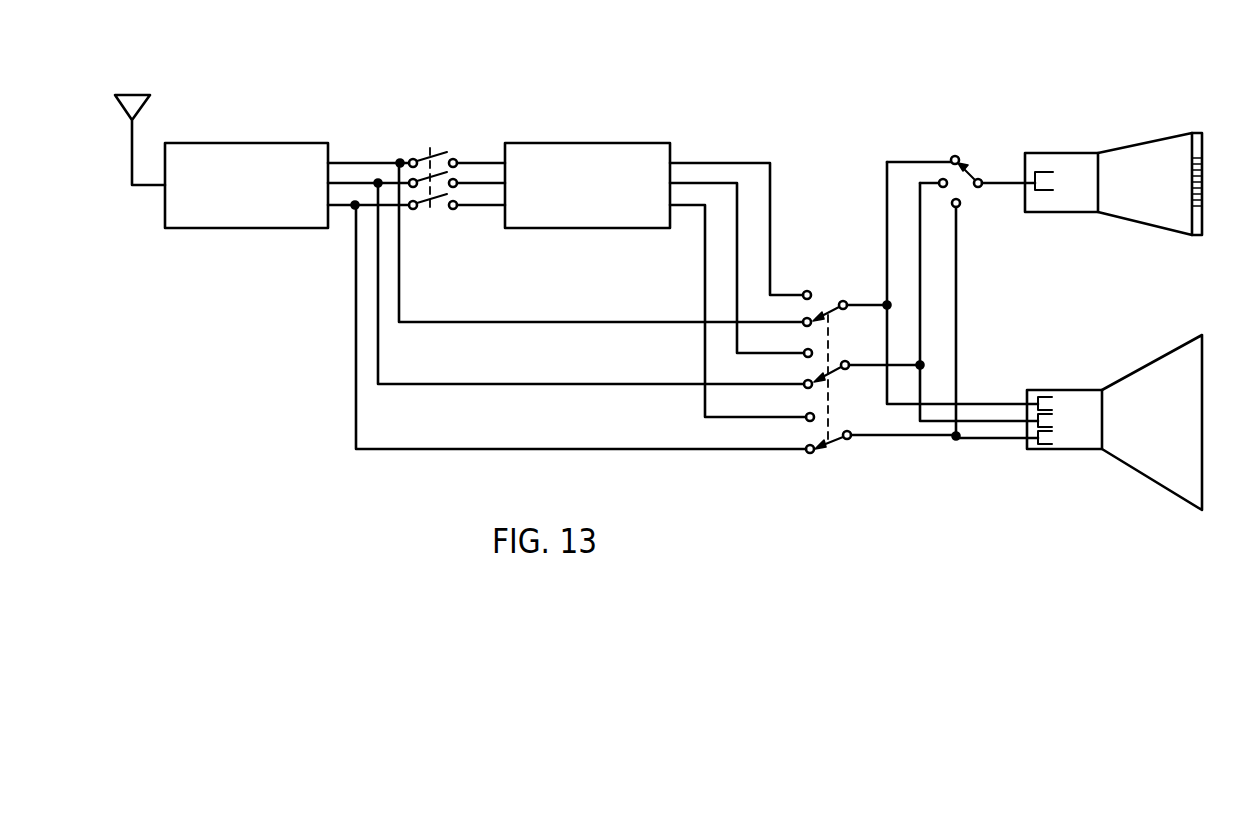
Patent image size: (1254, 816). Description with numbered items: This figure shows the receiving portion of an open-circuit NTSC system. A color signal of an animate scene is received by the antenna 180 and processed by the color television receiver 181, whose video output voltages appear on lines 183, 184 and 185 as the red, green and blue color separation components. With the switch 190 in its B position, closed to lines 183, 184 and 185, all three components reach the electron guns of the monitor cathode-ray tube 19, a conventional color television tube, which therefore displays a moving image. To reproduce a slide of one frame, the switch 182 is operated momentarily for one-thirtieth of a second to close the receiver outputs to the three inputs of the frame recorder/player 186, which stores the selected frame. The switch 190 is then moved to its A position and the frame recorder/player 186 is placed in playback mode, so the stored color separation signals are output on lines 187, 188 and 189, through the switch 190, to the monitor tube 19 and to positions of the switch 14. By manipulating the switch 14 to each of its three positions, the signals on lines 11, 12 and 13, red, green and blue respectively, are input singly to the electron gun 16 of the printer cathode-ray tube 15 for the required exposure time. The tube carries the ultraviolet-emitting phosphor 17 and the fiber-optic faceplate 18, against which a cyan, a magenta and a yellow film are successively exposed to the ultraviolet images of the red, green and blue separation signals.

The antenna 180 is at (131, 93).
The color television receiver 181 is at (255, 143).
The switch 182 is at (422, 151).
The line 183 is at (399, 279).
The line 184 is at (378, 311).
The line 185 is at (356, 354).
The frame recorder/player 186 is at (585, 143).
The line 187 is at (722, 160).
The line 188 is at (737, 262).
The line 189 is at (705, 297).
The switch 190 is at (826, 313).
The line 11 is at (887, 248).
The line 12 is at (920, 325).
The line 13 is at (956, 356).
The switch 14 is at (973, 170).
The cathode-ray tube 15 is at (1092, 153).
The electron gun 16 is at (1040, 170).
The ultraviolet-emitting phosphor 17 is at (1188, 188).
The fiber-optic faceplate 18 is at (1203, 200).
The monitor cathode-ray tube 19 is at (1120, 378).